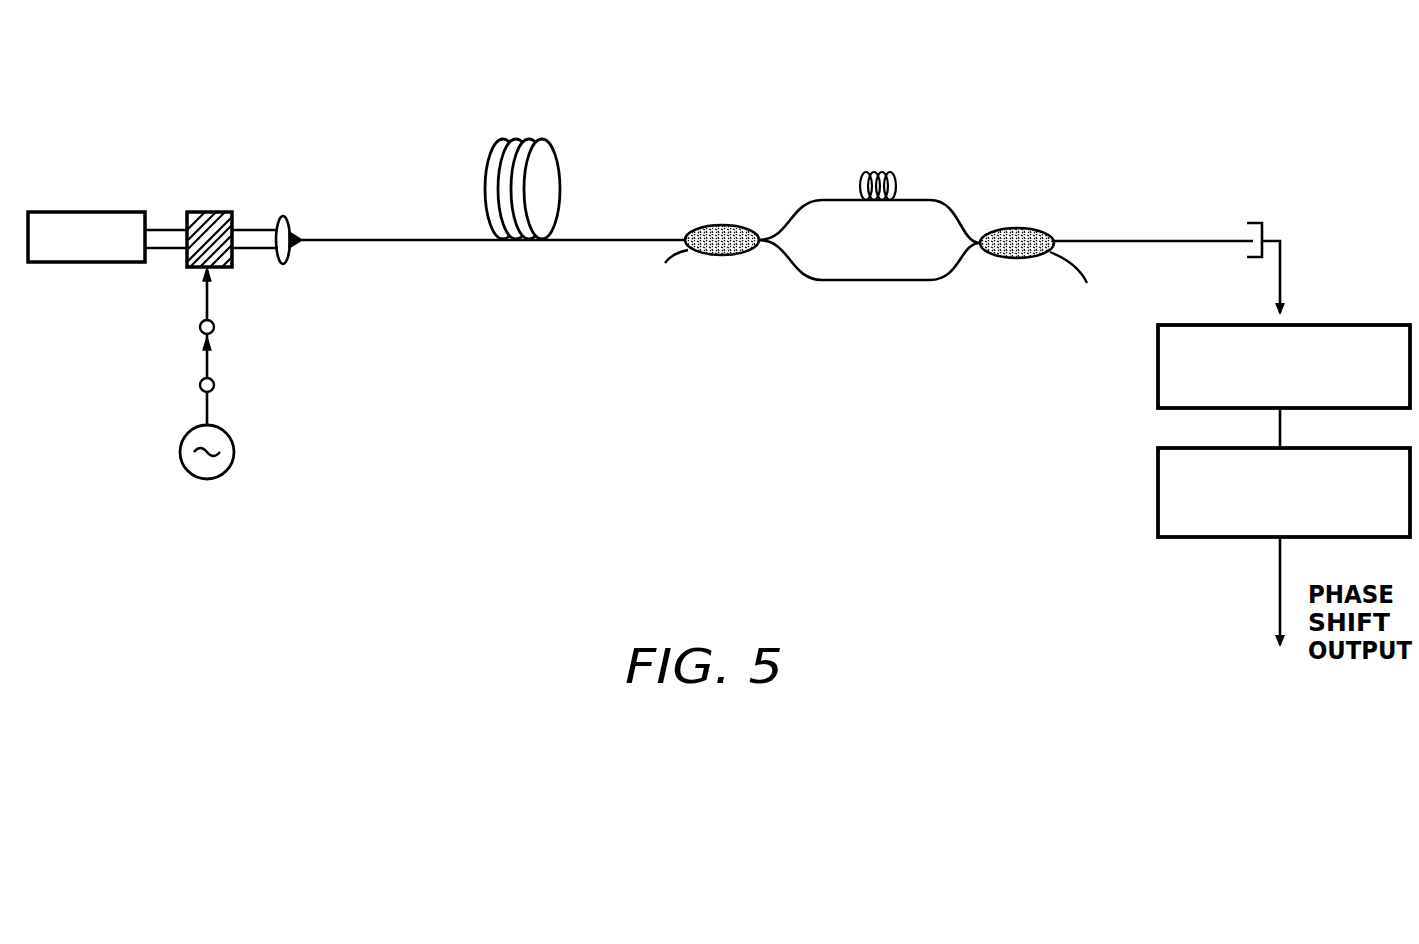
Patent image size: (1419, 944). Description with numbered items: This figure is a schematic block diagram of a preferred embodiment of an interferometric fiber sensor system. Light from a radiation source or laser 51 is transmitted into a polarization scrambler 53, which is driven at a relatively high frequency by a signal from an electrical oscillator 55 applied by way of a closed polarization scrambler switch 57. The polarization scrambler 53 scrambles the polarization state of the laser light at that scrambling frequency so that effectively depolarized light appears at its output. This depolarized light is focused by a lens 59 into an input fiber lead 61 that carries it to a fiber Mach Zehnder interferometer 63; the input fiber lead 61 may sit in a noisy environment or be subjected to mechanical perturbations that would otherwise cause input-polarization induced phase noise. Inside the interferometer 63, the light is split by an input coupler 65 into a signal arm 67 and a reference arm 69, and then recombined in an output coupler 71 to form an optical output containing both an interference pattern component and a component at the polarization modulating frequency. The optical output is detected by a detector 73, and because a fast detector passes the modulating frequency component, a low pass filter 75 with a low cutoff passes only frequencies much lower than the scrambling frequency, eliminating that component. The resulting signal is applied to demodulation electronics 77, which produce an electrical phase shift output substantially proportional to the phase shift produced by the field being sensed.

The laser 51 is at (62, 212).
The polarization scrambler 53 is at (233, 212).
The electrical oscillator 55 is at (234, 452).
The polarization scrambler switch 57 is at (208, 362).
The lens 59 is at (290, 225).
The input fiber lead 61 is at (580, 160).
The Mach Zehnder interferometer 63 is at (808, 76).
The input coupler 65 is at (718, 225).
The signal arm 67 is at (896, 186).
The reference arm 69 is at (933, 282).
The output coupler 71 is at (1027, 228).
The detector 73 is at (1262, 243).
The low pass filter 75 is at (1337, 325).
The demodulation electronics 77 is at (1158, 497).